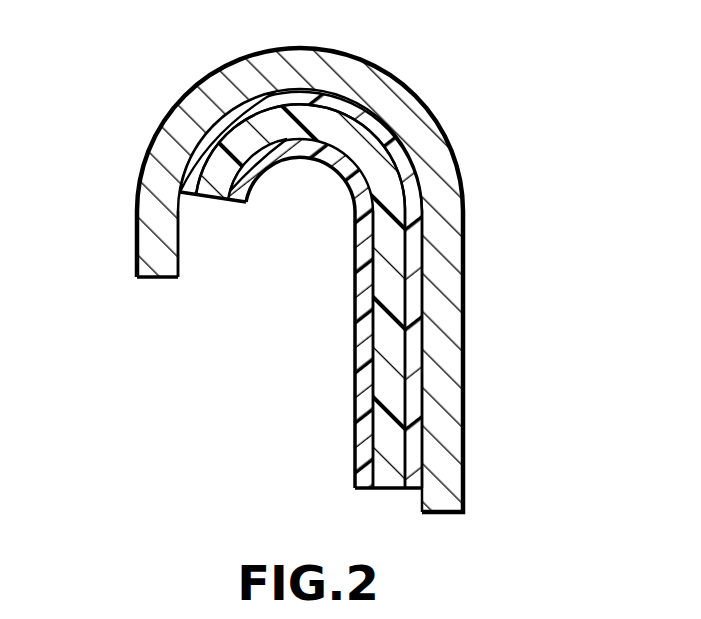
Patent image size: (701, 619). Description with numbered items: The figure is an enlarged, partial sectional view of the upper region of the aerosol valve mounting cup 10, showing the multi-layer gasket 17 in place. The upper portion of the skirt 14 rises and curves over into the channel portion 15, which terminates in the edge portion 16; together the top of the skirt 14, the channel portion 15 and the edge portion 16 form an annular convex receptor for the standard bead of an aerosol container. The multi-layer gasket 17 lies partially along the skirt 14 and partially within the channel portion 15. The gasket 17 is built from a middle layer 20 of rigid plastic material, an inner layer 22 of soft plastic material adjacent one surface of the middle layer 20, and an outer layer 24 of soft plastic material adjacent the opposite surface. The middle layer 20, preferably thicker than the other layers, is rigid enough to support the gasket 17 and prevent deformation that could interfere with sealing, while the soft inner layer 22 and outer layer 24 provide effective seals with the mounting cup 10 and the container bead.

The mounting cup 10 is at (321, 292).
The skirt 14 is at (361, 326).
The channel portion 15 is at (265, 268).
The edge portion 16 is at (133, 240).
The multi-layer gasket 17 is at (421, 494).
The middle layer 20 is at (392, 390).
The inner layer 22 is at (413, 437).
The outer layer 24 is at (247, 185).